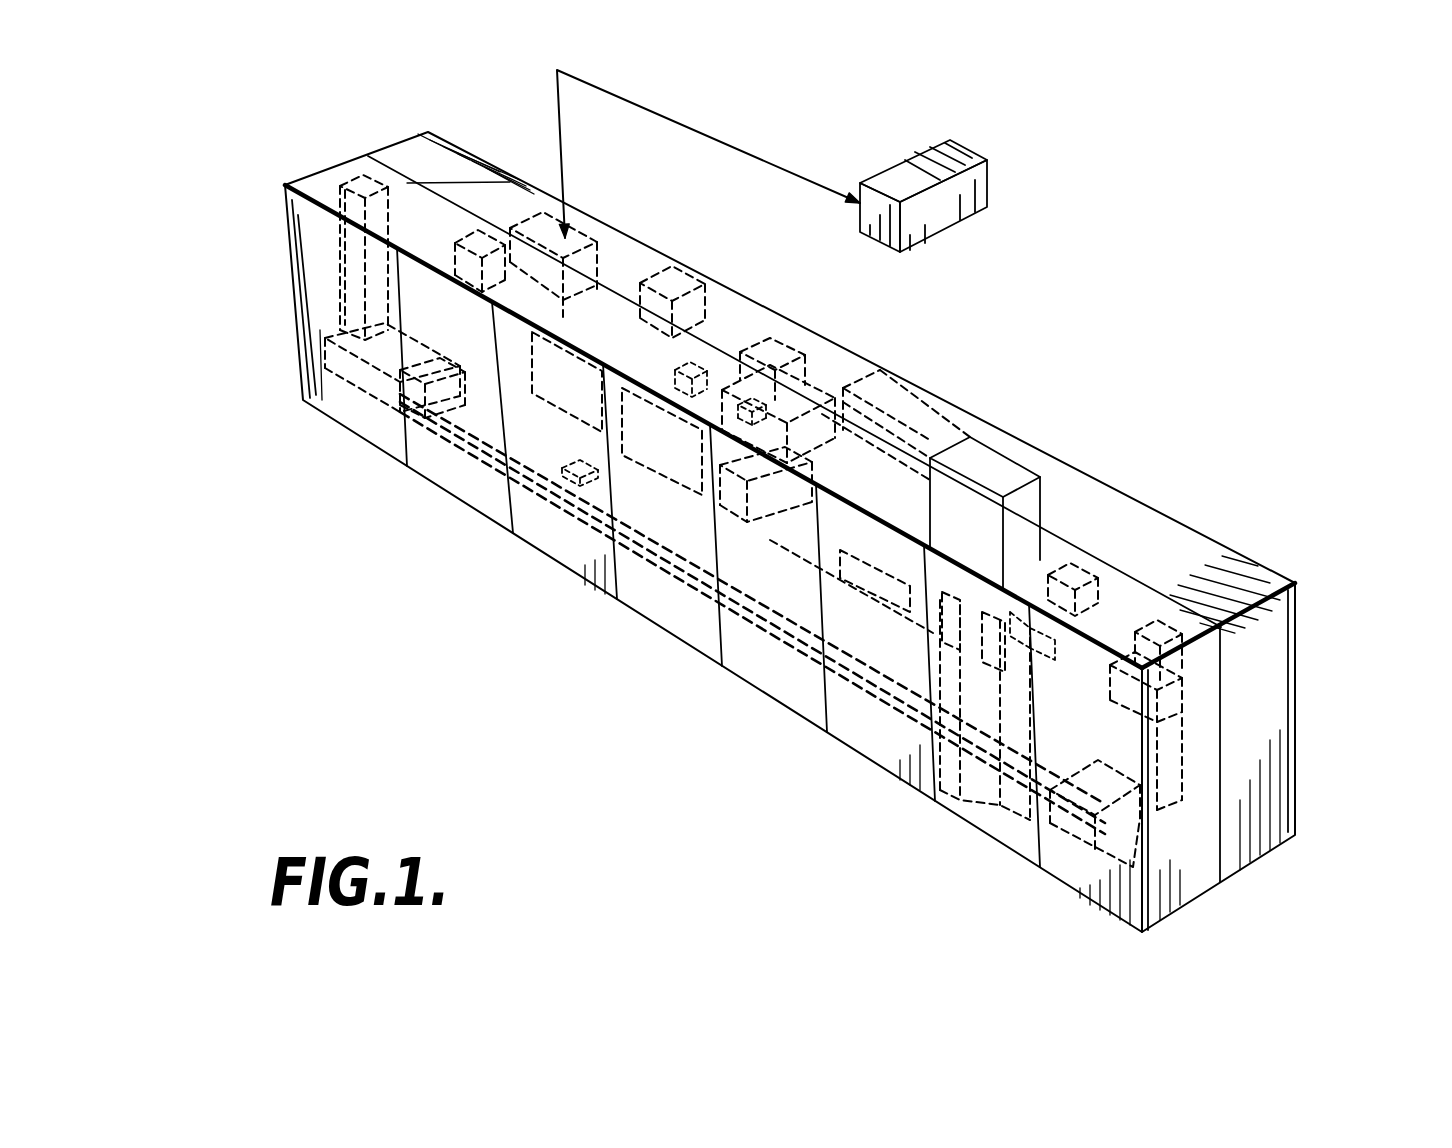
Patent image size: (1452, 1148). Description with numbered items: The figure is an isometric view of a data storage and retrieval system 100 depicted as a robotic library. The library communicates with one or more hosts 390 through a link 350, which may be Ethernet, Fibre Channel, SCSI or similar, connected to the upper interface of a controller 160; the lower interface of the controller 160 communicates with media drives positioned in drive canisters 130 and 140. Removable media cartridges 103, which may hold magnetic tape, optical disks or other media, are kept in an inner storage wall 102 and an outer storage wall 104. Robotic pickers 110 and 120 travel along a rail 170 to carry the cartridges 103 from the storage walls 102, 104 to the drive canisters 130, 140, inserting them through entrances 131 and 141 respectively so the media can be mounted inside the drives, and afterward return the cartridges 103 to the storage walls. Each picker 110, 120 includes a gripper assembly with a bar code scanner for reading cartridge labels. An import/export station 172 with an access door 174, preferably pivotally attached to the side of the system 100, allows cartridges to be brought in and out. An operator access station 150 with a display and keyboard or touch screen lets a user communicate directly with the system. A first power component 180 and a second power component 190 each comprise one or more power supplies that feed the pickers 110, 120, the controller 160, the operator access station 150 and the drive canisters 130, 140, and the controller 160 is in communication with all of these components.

The data storage and retrieval system 100 is at (1078, 238).
The inner storage wall 102 is at (578, 300).
The removable media cartridges 103 is at (572, 484).
The outer storage wall 104 is at (527, 442).
The robotic picker 110 is at (345, 265).
The robotic picker 120 is at (1177, 698).
The drive canister 130 is at (760, 343).
The entrance 131 is at (686, 388).
The drive canister 140 is at (813, 362).
The entrance 141 is at (742, 410).
The operator access station 150 is at (667, 288).
The controller 160 is at (573, 240).
The rail 170 is at (673, 568).
The import/export station 172 is at (990, 735).
The access door 174 is at (920, 725).
The first power component 180 is at (1070, 572).
The second power component 190 is at (1043, 635).
The link 350 is at (690, 127).
The host 390 is at (950, 147).